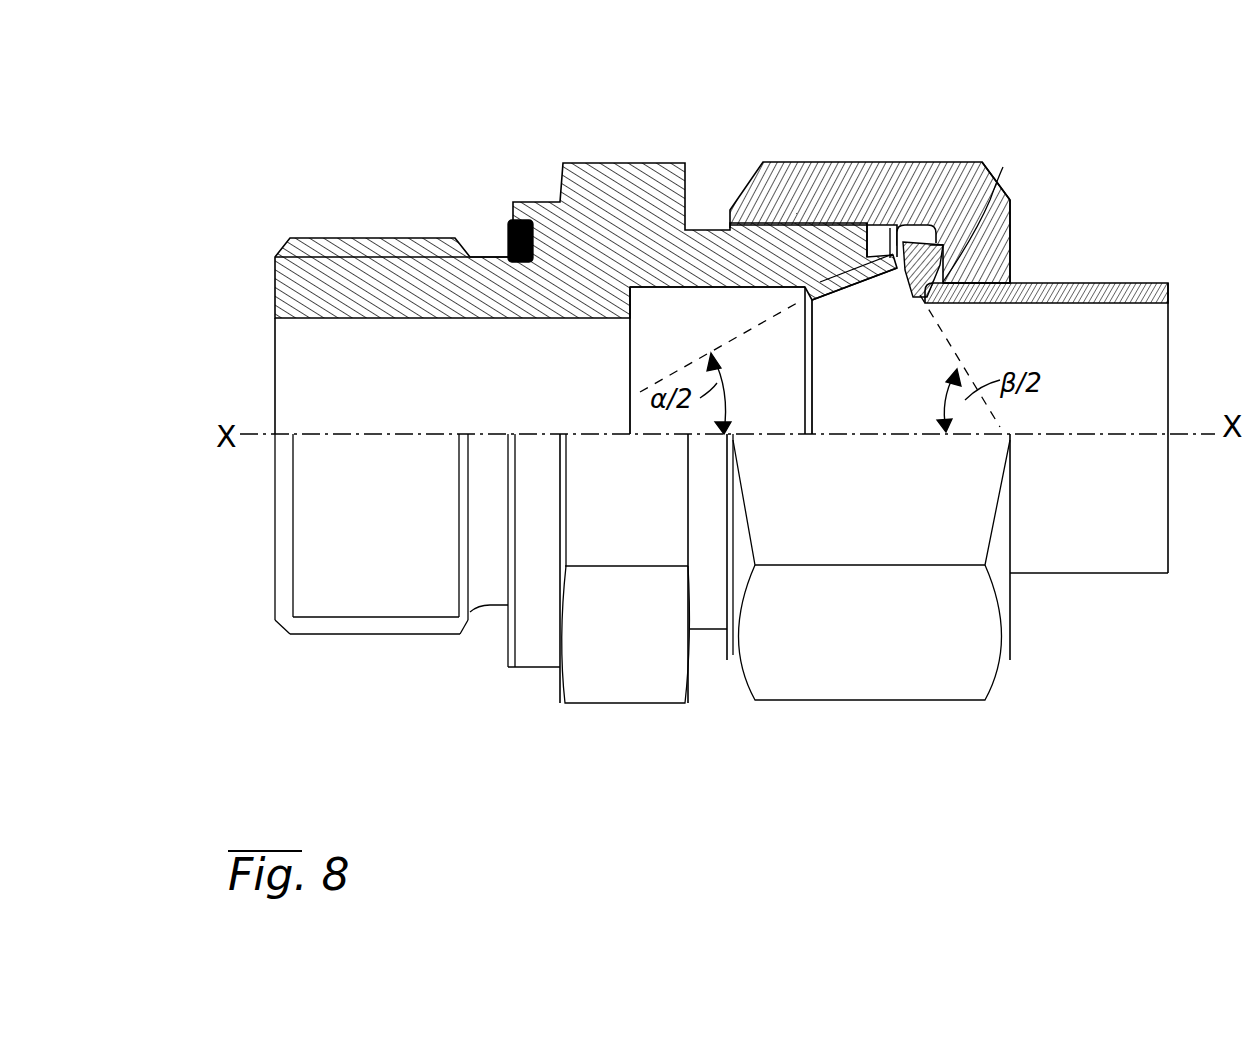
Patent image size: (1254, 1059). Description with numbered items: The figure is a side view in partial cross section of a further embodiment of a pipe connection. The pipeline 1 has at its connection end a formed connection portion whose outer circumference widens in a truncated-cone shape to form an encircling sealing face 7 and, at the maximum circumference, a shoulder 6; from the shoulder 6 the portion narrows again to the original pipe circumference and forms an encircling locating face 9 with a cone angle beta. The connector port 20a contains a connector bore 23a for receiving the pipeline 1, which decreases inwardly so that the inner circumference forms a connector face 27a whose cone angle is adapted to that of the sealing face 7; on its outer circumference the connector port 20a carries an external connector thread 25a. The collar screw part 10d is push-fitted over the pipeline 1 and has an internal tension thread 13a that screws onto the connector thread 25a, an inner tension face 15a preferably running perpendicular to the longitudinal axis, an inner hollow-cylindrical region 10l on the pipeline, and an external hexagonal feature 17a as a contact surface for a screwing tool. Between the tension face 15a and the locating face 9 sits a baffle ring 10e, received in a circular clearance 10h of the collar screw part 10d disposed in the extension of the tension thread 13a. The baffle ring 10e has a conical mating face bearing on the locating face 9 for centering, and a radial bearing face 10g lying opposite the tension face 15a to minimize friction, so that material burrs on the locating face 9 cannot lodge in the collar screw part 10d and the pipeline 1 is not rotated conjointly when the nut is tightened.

The connector port 20a is at (532, 174).
The connector bore 23a is at (666, 333).
The connector thread 25a is at (755, 163).
The collar screw part 10d is at (805, 163).
The tension thread 13a is at (866, 262).
The connector face 27a is at (843, 258).
The sealing face 7 is at (888, 250).
The shoulder 6 is at (935, 233).
The clearance 10h is at (987, 161).
The baffle ring 10e is at (1007, 175).
The bearing face 10g is at (998, 188).
The locating face 9 is at (1007, 207).
The pipeline 1 is at (1133, 272).
The sleeve inner surface 10l is at (883, 277).
The tension face 15a is at (903, 273).
The external hexagonal feature 17a is at (618, 627).